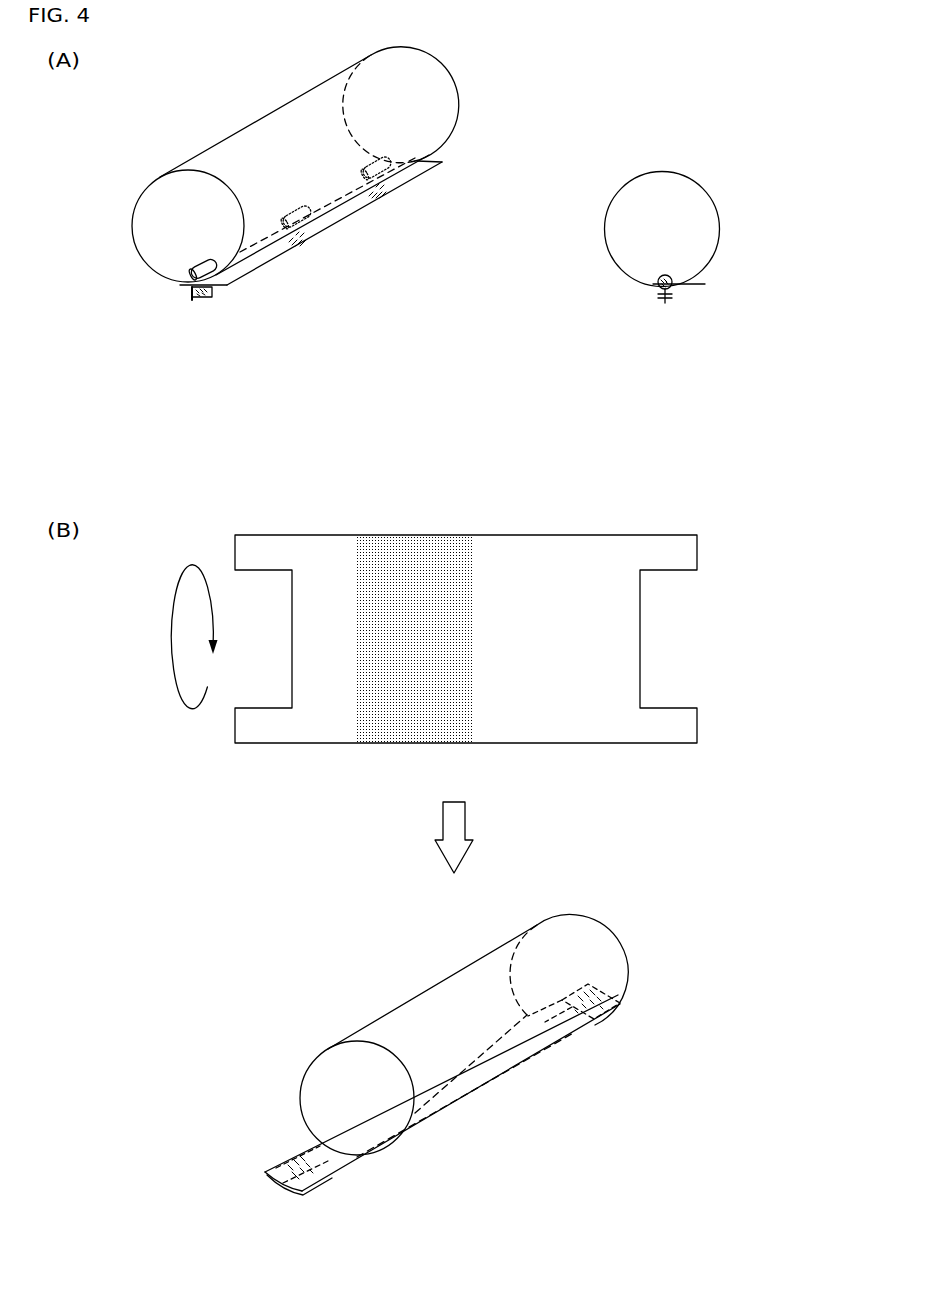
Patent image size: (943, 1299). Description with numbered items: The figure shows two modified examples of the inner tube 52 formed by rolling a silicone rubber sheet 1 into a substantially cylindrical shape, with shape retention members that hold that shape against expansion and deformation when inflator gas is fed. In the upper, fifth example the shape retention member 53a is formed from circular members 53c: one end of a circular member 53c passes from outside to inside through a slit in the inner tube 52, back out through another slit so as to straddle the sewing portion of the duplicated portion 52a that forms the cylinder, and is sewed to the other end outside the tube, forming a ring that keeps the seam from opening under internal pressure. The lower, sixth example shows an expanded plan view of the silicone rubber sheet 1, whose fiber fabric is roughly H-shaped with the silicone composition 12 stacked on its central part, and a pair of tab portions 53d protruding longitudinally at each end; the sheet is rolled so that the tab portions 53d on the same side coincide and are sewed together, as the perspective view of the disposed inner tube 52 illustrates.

The silicone rubber sheet 1 is at (540, 513).
The silicone composition 12 is at (428, 645).
The inner tube 52 is at (222, 105).
The duplicated portion 52a is at (190, 276).
The shape retention member 53a is at (720, 217).
The circular member 53c is at (200, 300).
The tab portion 53d is at (235, 541).